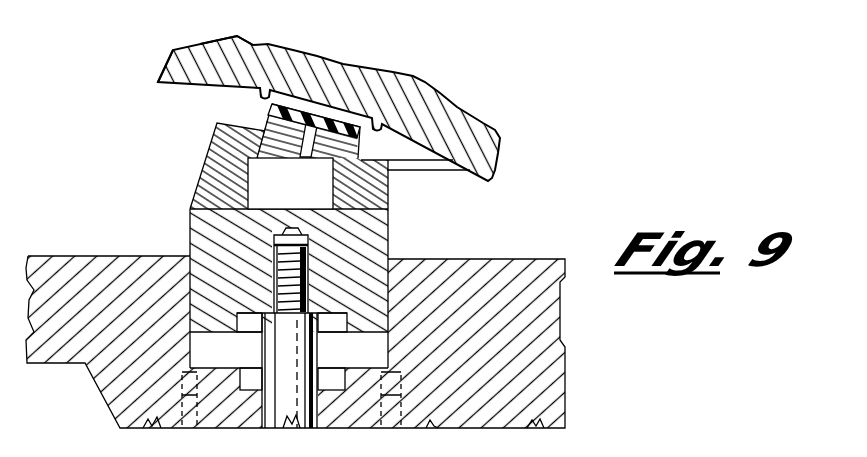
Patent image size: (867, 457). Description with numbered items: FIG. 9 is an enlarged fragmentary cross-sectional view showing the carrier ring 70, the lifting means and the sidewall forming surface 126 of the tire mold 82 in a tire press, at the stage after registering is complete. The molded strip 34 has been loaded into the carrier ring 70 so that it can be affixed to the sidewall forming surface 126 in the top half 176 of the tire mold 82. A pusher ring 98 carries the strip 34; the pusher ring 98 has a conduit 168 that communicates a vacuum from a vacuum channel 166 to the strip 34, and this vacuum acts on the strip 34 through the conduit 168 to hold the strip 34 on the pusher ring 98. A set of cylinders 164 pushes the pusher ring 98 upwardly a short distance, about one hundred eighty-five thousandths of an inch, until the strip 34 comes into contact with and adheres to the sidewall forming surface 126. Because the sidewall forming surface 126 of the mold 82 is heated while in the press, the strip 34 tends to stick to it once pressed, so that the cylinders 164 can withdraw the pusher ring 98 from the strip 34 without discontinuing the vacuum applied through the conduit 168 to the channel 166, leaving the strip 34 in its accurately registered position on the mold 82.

The carrier ring 70 is at (498, 260).
The third set of cylinders 164 is at (370, 238).
The vacuum channel 166 is at (320, 188).
The conduit 168 is at (263, 125).
The pusher ring 98 is at (203, 168).
The strip 34 is at (333, 116).
The top half 176 is at (442, 110).
The sidewall forming surface 126 is at (232, 40).
The tire mold 82 is at (160, 80).